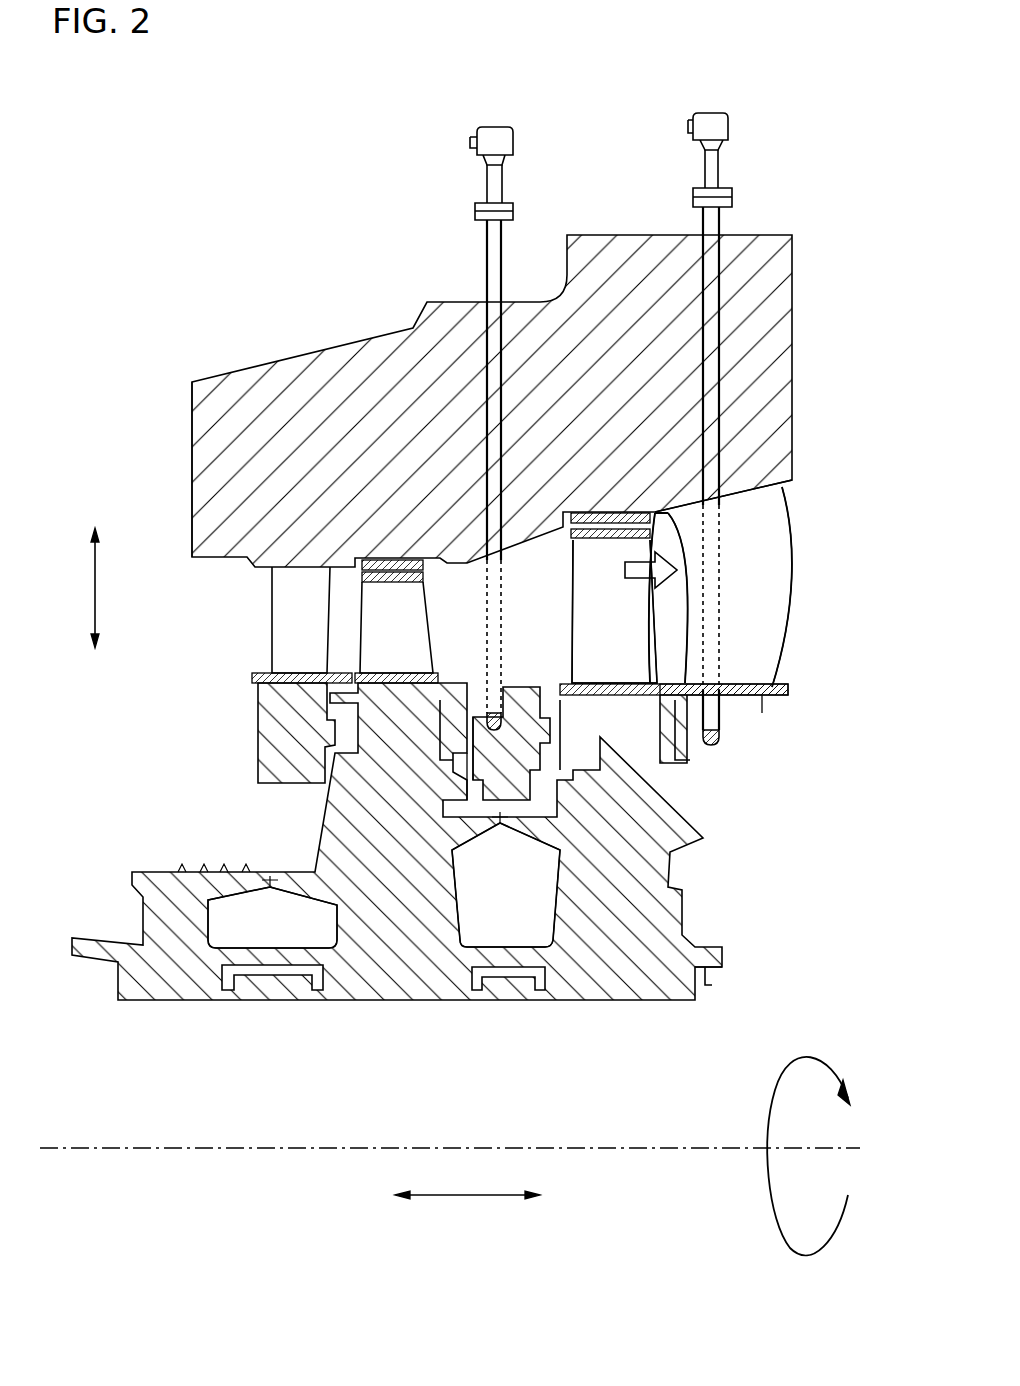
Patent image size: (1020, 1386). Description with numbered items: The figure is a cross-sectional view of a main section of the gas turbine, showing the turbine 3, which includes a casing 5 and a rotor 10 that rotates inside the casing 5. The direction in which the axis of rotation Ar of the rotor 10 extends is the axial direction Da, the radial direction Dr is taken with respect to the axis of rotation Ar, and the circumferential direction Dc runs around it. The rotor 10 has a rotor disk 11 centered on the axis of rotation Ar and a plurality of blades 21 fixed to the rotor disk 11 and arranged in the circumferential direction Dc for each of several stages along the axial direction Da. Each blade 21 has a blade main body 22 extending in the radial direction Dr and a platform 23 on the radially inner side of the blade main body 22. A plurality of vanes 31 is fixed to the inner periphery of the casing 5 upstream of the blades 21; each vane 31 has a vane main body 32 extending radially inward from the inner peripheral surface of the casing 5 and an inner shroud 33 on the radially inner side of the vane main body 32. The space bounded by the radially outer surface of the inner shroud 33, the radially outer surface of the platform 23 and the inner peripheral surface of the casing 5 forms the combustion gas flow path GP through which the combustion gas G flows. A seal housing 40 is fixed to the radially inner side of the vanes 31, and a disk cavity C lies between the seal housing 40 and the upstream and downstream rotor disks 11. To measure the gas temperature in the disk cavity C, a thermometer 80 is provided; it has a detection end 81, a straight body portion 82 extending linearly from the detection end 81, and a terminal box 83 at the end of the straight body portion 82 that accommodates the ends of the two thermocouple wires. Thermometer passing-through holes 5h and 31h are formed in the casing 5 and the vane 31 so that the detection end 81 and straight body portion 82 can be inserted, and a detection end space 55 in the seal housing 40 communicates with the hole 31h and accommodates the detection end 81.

The turbine 3 is at (185, 318).
The casing 5 is at (285, 358).
The thermometer passing-through hole 5h is at (487, 347).
The rotor 10 is at (106, 972).
The rotor disk 11 is at (362, 962).
The blade 21 is at (375, 633).
The blade main body 22 is at (648, 615).
The platform 23 is at (635, 620).
The vane 31 is at (273, 607).
The thermometer passing-through hole 31h is at (470, 553).
The vane main body 32 is at (757, 655).
The inner shroud 33 is at (788, 690).
The seal housing 40 is at (447, 752).
The detection end space 55 is at (478, 752).
The thermometer 80 is at (628, 392).
The detection end 81 is at (522, 705).
The straight body portion 82 is at (500, 258).
The terminal box 83 is at (505, 141).
The disk cavity C is at (466, 760).
The combustion gas G is at (660, 548).
The combustion gas flow path GP is at (630, 560).
The axis of rotation Ar is at (700, 1146).
The axial direction Da is at (478, 1213).
The circumferential direction Dc is at (808, 1043).
The radial direction Dr is at (80, 588).